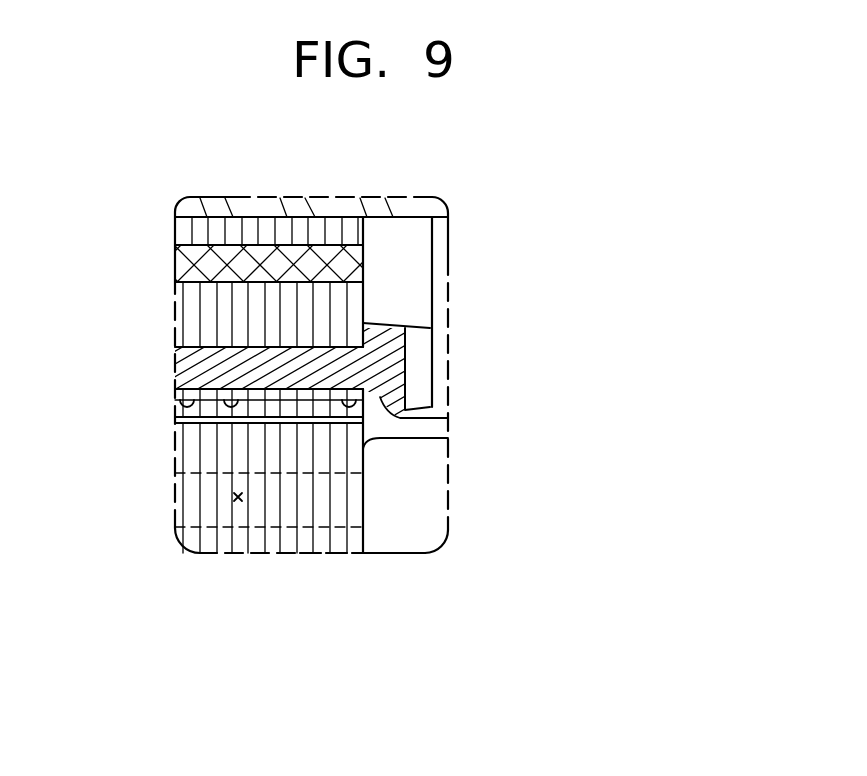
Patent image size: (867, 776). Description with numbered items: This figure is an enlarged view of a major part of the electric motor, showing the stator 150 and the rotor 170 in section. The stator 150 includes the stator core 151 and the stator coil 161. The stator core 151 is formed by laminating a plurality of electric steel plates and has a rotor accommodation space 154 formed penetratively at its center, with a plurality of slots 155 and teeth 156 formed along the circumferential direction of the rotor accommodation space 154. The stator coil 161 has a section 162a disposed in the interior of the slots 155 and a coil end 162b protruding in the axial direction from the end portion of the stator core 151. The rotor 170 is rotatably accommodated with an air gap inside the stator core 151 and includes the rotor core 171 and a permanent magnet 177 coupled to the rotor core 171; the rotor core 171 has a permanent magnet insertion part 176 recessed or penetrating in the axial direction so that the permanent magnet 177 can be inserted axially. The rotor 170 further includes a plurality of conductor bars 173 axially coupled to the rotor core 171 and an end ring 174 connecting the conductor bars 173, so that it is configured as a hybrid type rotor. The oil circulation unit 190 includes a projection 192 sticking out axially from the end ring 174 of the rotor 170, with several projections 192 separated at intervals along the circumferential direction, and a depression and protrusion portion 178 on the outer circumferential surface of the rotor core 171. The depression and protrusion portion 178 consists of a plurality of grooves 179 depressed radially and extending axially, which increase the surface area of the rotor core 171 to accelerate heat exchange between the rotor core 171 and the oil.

The stator 150 is at (223, 679).
The stator core 151 is at (185, 632).
The rotor accommodation space 154 is at (212, 421).
The slots 155 is at (238, 503).
The teeth 156 is at (270, 447).
The stator coil 161 is at (307, 632).
The section 162a is at (320, 530).
The coil end 162b is at (390, 525).
The rotor 170 is at (523, 407).
The rotor core 171 is at (253, 330).
The conductor bars 173 is at (448, 420).
The end ring 174 is at (303, 372).
The permanent magnet insertion part 176 is at (367, 273).
The permanent magnet 177 is at (350, 262).
The depression and protrusion portion 178 is at (367, 387).
The grooves 179 is at (222, 398).
The oil circulation unit 190 is at (523, 310).
The projection 192 is at (420, 343).